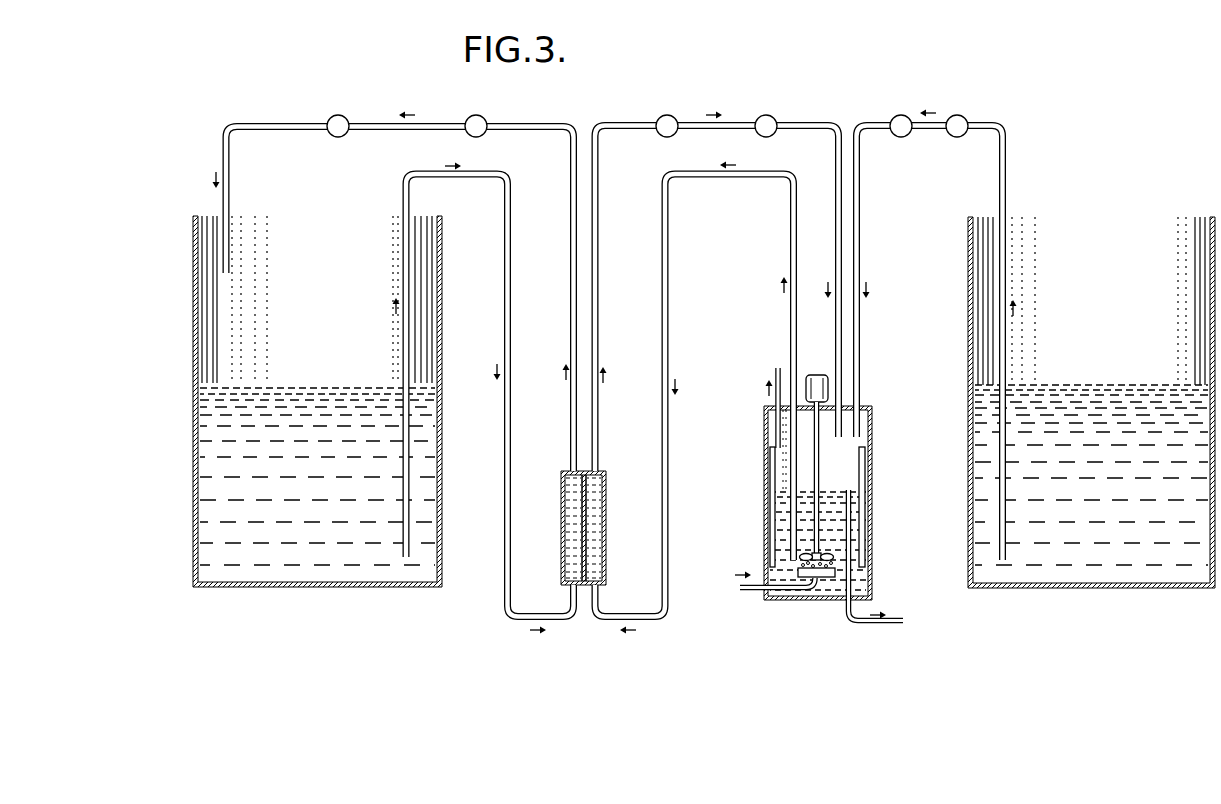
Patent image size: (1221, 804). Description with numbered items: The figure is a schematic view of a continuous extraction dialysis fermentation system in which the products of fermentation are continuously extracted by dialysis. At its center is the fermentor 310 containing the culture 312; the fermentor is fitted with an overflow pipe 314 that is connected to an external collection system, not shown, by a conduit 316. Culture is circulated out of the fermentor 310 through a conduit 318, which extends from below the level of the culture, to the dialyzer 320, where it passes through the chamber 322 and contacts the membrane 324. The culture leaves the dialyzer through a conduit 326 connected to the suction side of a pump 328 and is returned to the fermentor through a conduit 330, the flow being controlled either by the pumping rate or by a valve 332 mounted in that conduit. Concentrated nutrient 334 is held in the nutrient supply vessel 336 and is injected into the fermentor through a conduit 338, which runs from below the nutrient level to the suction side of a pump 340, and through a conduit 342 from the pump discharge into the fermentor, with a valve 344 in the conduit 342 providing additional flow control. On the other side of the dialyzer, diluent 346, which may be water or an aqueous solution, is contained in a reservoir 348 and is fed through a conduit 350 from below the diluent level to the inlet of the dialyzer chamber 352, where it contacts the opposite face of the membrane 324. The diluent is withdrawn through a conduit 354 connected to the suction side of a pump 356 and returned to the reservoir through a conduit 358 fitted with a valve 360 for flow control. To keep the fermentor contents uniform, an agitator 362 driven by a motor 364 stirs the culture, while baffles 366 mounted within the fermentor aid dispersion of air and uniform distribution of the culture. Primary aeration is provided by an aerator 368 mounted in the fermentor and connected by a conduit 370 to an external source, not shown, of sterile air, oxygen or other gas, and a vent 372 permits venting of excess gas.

The fermentor 310 is at (752, 452).
The culture 312 is at (790, 533).
The overflow pipe 314 is at (851, 552).
The conduit 316 is at (888, 624).
The conduit 318 is at (735, 178).
The dialyzer 320 is at (611, 469).
The chamber 322 is at (602, 551).
The membrane 324 is at (582, 515).
The conduit 326 is at (598, 252).
The pump 328 is at (667, 114).
The conduit 330 is at (836, 236).
The valve 332 is at (766, 114).
The concentrated nutrient 334 is at (978, 430).
The nutrient supply vessel 336 is at (1140, 222).
The conduit 338 is at (1006, 170).
The pump 340 is at (959, 114).
The conduit 342 is at (860, 222).
The valve 344 is at (901, 114).
The diluent 346 is at (200, 467).
The reservoir 348 is at (202, 343).
The conduit 350 is at (511, 250).
The chamber 352 is at (566, 550).
The conduit 354 is at (570, 317).
The pump 356 is at (478, 115).
The conduit 358 is at (258, 122).
The valve 360 is at (338, 115).
The agitator 362 is at (800, 555).
The motor 364 is at (815, 375).
The baffles 366 is at (770, 503).
The aerator 368 is at (817, 580).
The conduit 370 is at (749, 590).
The vent 372 is at (778, 368).